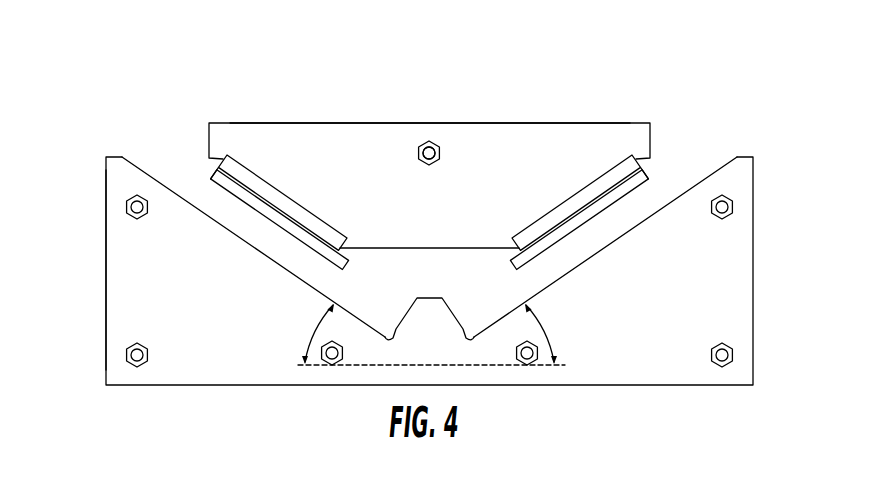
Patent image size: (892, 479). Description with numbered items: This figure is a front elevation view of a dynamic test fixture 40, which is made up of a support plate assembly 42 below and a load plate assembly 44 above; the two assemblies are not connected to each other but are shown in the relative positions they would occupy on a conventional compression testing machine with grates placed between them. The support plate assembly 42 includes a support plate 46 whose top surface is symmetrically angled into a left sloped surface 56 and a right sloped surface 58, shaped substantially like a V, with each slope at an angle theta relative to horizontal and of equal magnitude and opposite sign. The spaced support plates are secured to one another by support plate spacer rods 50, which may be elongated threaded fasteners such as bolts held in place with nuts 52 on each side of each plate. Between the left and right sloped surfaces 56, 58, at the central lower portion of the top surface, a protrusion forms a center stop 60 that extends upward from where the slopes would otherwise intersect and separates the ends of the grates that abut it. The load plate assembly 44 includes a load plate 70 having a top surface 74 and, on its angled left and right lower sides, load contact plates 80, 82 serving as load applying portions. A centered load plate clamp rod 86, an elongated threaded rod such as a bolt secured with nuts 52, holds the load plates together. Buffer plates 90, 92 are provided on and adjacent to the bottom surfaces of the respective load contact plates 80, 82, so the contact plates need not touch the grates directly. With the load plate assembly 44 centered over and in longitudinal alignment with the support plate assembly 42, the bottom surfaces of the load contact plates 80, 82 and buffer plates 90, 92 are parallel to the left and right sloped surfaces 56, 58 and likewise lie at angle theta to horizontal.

The dynamic test fixture 40 is at (640, 79).
The support plate assembly 42 is at (90, 325).
The load plate assembly 44 is at (532, 108).
The support plate 46 is at (105, 257).
The support plate spacer rod 50 is at (527, 366).
The nut 52 is at (137, 368).
The left sloped surface 56 is at (159, 175).
The right sloped surface 58 is at (705, 171).
The center stop 60 is at (435, 311).
The load plate 70 is at (318, 138).
The top surface 74 is at (401, 115).
The load contact plate 80 is at (305, 217).
The load contact plate 82 is at (553, 208).
The load plate clamp rod 86 is at (437, 146).
The buffer plate 90 is at (340, 264).
The buffer plate 92 is at (516, 265).